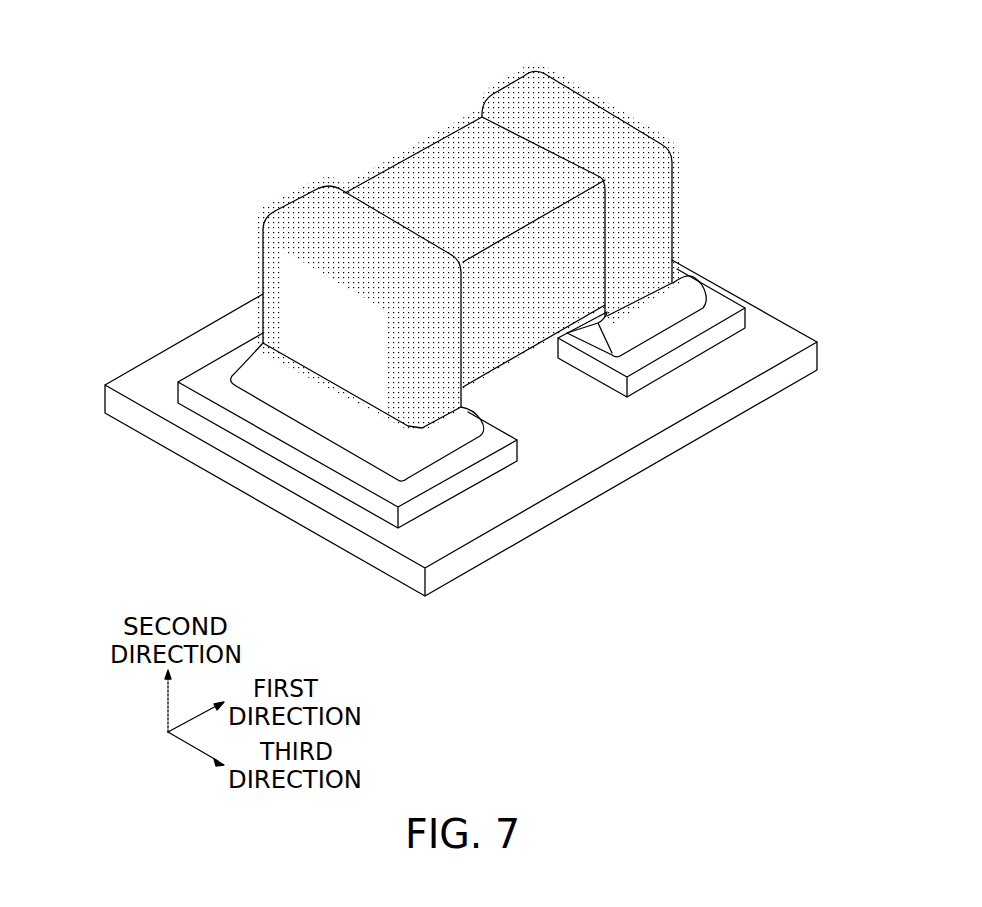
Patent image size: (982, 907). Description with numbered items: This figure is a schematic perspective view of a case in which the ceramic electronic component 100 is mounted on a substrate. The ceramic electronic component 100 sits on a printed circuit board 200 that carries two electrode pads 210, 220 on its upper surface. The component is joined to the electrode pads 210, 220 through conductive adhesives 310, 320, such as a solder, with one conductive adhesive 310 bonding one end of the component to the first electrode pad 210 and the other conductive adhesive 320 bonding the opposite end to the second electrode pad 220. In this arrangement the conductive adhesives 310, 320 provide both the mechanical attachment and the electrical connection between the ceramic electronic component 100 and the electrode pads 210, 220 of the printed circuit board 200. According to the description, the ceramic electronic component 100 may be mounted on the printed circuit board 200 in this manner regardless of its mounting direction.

The ceramic electronic component 100 is at (421, 103).
The printed circuit board 200 is at (607, 475).
The electrode pad 210 is at (450, 490).
The electrode pad 220 is at (679, 357).
The conductive adhesive 310 is at (358, 424).
The conductive adhesive 320 is at (685, 302).